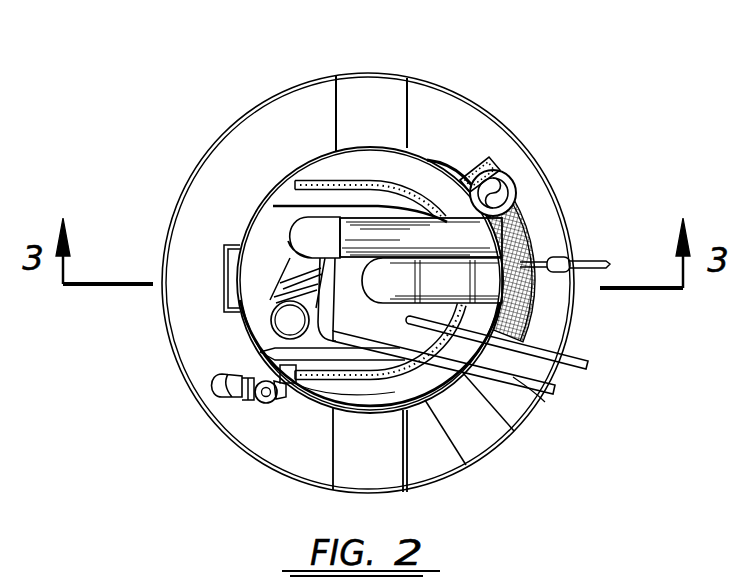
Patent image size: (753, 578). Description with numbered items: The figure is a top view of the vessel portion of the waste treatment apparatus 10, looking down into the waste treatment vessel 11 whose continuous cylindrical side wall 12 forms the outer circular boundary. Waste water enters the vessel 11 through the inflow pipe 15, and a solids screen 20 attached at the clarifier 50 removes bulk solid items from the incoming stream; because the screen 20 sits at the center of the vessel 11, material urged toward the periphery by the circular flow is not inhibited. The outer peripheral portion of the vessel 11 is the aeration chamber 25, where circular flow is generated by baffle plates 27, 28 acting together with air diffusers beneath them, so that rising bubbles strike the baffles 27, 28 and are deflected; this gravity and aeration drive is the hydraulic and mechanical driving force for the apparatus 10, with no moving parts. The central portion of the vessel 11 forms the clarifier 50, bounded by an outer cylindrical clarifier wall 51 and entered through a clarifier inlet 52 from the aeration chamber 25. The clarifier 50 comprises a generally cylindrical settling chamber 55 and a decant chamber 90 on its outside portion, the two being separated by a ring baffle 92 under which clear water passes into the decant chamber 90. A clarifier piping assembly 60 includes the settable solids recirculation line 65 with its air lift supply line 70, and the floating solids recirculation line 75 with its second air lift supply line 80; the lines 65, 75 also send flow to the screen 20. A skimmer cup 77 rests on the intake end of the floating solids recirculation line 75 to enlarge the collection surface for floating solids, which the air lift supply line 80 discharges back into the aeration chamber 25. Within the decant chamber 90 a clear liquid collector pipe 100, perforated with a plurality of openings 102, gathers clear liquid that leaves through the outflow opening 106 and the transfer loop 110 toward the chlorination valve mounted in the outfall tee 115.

The waste treatment apparatus 10 is at (540, 116).
The waste treatment vessel 11 is at (468, 94).
The continuous cylindrical side wall 12 is at (427, 487).
The inflow pipe 15 is at (517, 185).
The solids screen 20 is at (530, 225).
The aeration chamber 25 is at (244, 181).
The baffle plate 27 is at (366, 88).
The baffle plate 28 is at (367, 463).
The clarifier 50 is at (434, 398).
The outer cylindrical clarifier wall 51 is at (467, 463).
The clarifier inlet 52 is at (222, 272).
The settling chamber 55 is at (263, 237).
The clarifier piping assembly 60 is at (366, 217).
The settable solids recirculation line 65 is at (503, 290).
The air lift supply line 70 is at (574, 354).
The floating solids recirculation line 75 is at (287, 224).
The skimmer cup 77 is at (270, 319).
The second air lift supply line 80 is at (547, 397).
The decant chamber 90 is at (343, 390).
The ring baffle 92 is at (283, 310).
The clear liquid collector pipe 100 is at (467, 160).
The openings 102 is at (340, 182).
The outflow opening 106 is at (292, 399).
The transfer loop 110 is at (226, 387).
The outfall tee 115 is at (258, 404).